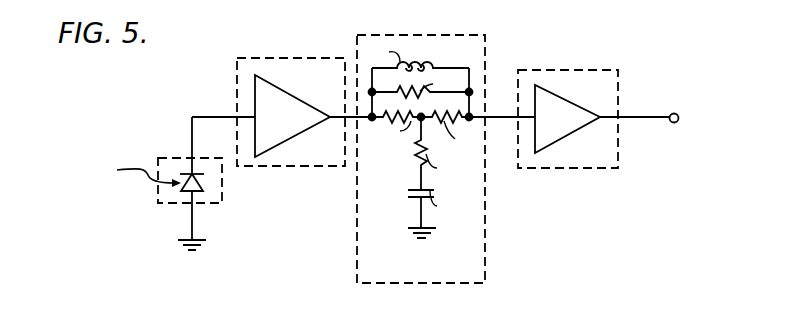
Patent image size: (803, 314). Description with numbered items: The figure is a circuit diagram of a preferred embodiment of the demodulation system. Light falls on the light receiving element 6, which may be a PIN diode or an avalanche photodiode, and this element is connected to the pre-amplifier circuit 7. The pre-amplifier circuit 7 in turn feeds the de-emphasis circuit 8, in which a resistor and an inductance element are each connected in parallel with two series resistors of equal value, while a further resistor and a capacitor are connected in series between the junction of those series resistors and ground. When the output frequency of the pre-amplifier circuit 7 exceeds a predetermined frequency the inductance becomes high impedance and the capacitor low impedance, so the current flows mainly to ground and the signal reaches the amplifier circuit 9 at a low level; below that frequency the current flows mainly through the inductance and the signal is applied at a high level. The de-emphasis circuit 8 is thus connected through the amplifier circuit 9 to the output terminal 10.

The light receiving element 6 is at (176, 158).
The pre-amplifier circuit 7 is at (316, 58).
The de-emphasis circuit 8 is at (484, 35).
The amplifier circuit 9 is at (605, 70).
The output terminal 10 is at (679, 114).